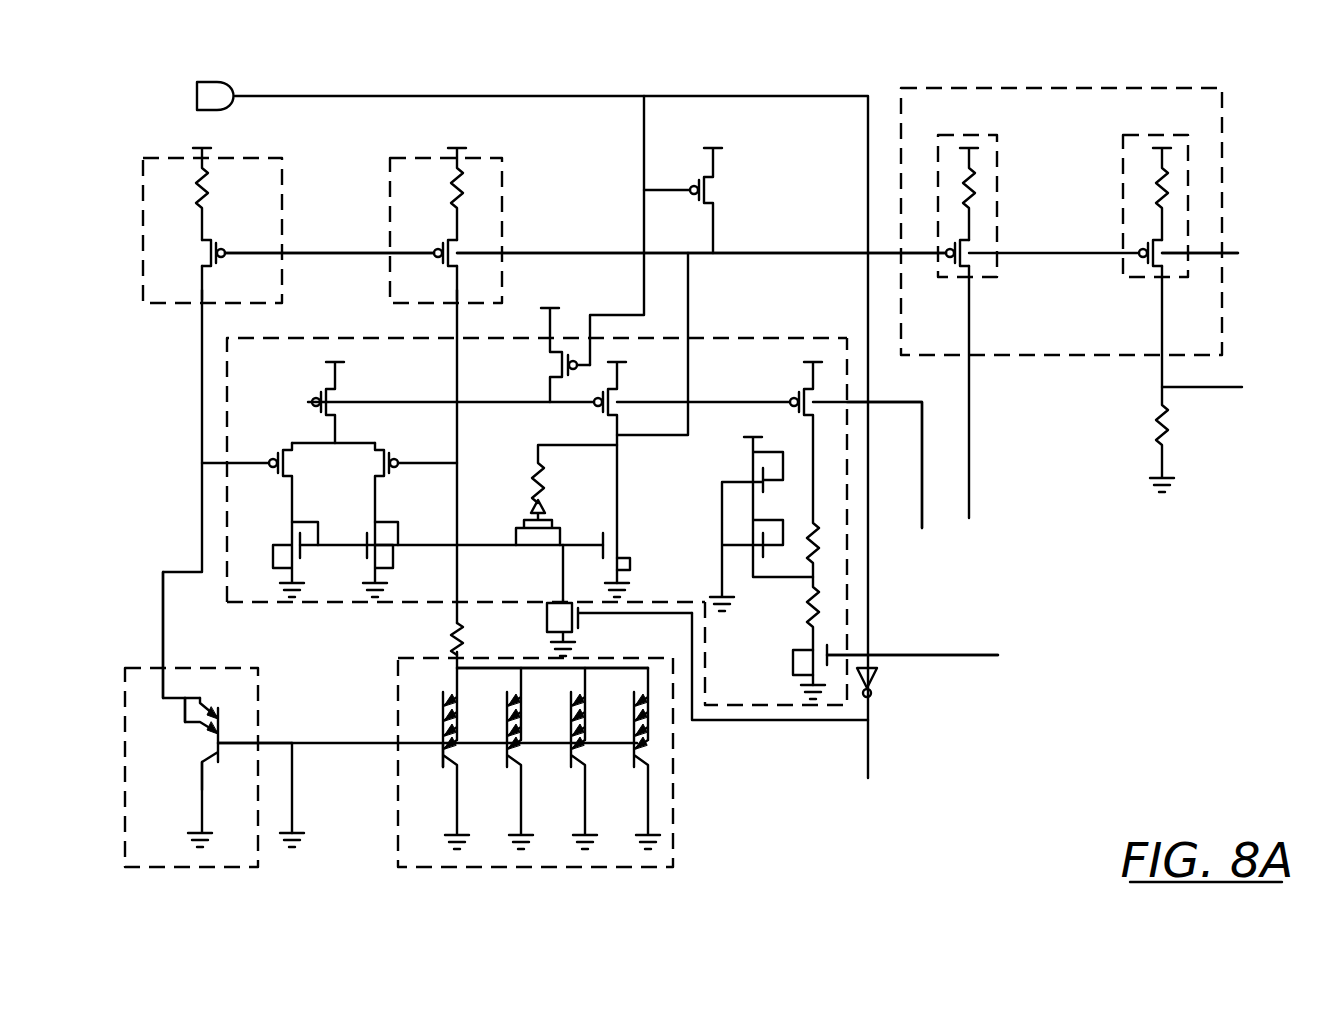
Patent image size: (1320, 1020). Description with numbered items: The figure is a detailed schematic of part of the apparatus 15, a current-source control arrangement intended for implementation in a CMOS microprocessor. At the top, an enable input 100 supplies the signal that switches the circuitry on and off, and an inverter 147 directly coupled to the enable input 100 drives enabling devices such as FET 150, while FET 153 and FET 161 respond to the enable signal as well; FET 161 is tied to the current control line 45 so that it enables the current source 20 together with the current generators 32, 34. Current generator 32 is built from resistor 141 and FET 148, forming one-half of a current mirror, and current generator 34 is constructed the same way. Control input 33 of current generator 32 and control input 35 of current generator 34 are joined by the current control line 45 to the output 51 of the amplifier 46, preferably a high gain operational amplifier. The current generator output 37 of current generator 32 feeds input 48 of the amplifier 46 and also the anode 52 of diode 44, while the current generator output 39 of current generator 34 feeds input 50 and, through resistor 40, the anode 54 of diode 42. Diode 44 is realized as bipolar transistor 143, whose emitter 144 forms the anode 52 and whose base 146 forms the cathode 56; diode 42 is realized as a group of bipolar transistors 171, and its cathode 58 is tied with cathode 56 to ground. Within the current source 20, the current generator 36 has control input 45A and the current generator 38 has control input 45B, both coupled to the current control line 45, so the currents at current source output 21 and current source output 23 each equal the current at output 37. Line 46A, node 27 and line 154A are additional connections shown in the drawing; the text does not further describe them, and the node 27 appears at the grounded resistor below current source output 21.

The apparatus 15 is at (467, 73).
The current source 20 is at (1229, 88).
The current source output 21 is at (1162, 314).
The current source output 23 is at (969, 352).
The output node 27 is at (1238, 388).
The current generator 32 is at (280, 158).
The control input 33 is at (256, 252).
The current generator 34 is at (500, 158).
The control input 35 is at (436, 253).
The current generator 36 is at (1180, 133).
The current generator output 37 is at (202, 296).
The current generator 38 is at (988, 135).
The current generator output 39 is at (455, 296).
The resistor 40 is at (456, 632).
The diode 42 is at (673, 764).
The diode 44 is at (131, 668).
The current control line 45 is at (784, 254).
The control input 45A is at (1100, 254).
The control input 45B is at (917, 254).
The amplifier 46 is at (844, 338).
The control line 46A is at (922, 528).
The input 48 is at (244, 462).
The input 50 is at (418, 463).
The output 51 is at (702, 322).
The anode 52 is at (163, 635).
The anode 54 is at (456, 684).
The cathode 56 is at (220, 762).
The cathode 58 is at (443, 748).
The enable input 100 is at (240, 96).
The resistor 141 is at (208, 182).
The bipolar transistor 143 is at (200, 760).
The emitter 144 is at (185, 705).
The base 146 is at (218, 724).
The inverter 147 is at (882, 688).
The FET 148 is at (212, 245).
The FET 150 is at (574, 620).
The FET 153 is at (593, 364).
The enable line 154A is at (968, 654).
The FET 161 is at (724, 209).
The bipolar transistors 171 is at (438, 728).